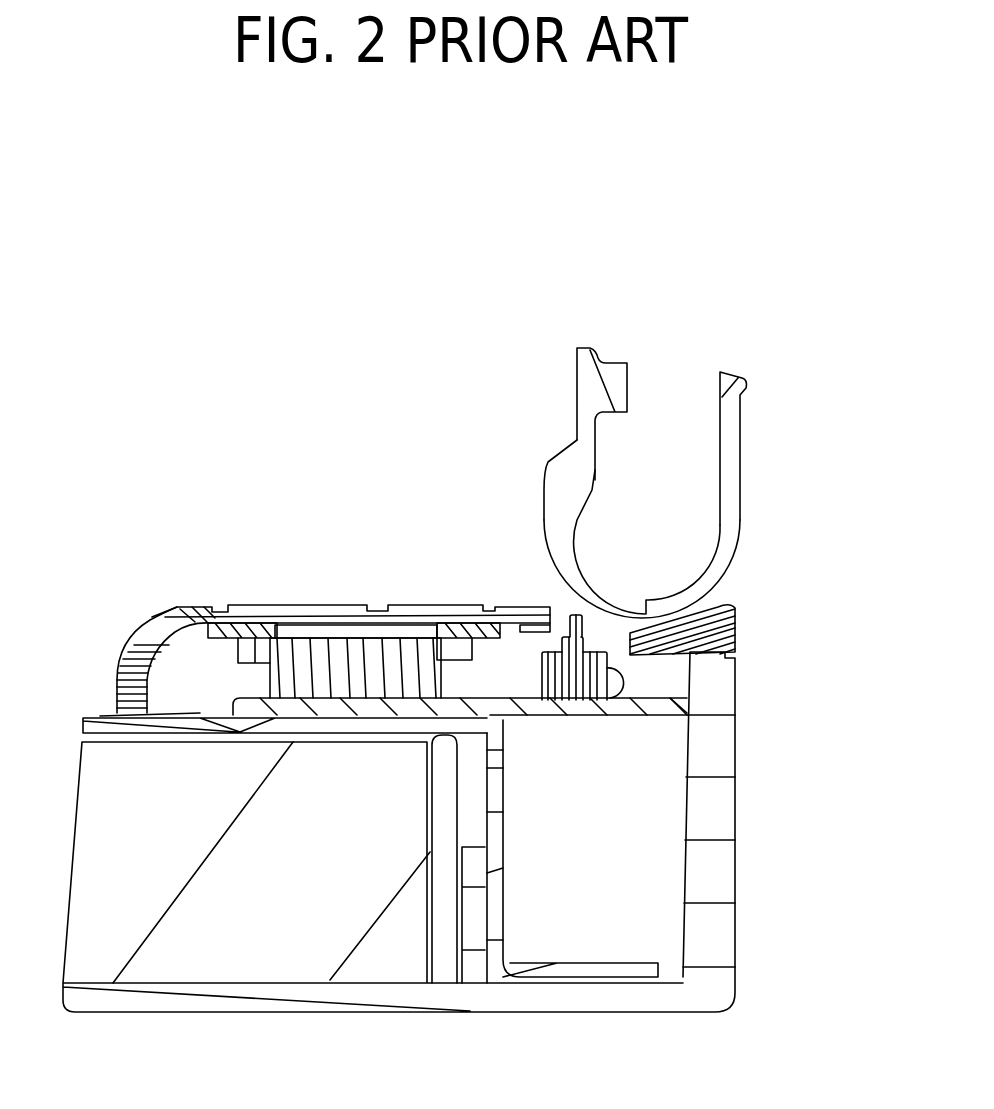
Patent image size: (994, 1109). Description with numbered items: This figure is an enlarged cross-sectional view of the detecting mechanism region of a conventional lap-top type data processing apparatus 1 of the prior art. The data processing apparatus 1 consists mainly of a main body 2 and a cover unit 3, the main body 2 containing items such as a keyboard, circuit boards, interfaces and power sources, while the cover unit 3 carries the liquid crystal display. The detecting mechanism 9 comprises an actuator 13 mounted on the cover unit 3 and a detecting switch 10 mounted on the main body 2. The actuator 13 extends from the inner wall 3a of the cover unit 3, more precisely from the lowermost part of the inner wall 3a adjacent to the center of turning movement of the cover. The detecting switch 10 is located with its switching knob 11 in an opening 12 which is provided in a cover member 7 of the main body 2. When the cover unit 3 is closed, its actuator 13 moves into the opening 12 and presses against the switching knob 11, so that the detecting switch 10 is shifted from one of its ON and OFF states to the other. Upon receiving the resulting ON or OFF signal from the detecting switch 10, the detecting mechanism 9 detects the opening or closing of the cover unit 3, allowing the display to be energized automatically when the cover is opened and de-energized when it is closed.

The data processing apparatus 1 is at (106, 366).
The main body 2 is at (404, 1038).
The cover unit 3 is at (764, 470).
The inner wall 3a is at (577, 407).
The cover member 7 is at (283, 613).
The detecting mechanism 9 is at (457, 485).
The detecting switch 10 is at (610, 716).
The switching knob 11 is at (573, 613).
The opening 12 is at (552, 607).
The actuator 13 is at (549, 476).